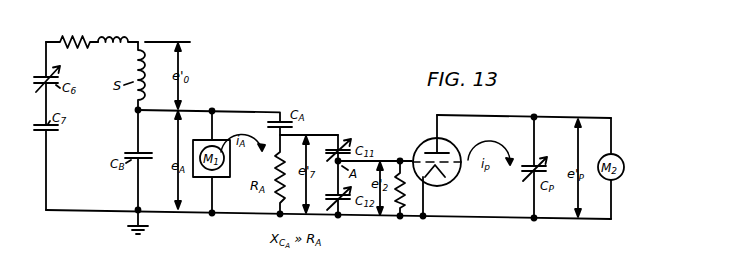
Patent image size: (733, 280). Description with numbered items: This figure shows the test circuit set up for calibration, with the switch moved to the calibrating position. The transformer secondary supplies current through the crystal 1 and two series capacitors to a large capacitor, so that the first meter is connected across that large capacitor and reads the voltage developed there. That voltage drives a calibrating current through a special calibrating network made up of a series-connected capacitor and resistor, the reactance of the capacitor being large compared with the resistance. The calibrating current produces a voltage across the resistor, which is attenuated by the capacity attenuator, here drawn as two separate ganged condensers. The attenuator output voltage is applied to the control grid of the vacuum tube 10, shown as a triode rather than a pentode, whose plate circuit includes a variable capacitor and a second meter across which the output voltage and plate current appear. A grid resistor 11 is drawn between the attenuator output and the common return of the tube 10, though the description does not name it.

The crystal 1 is at (130, 47).
The vacuum tube 10 is at (420, 147).
The grid resistor 11 is at (405, 205).